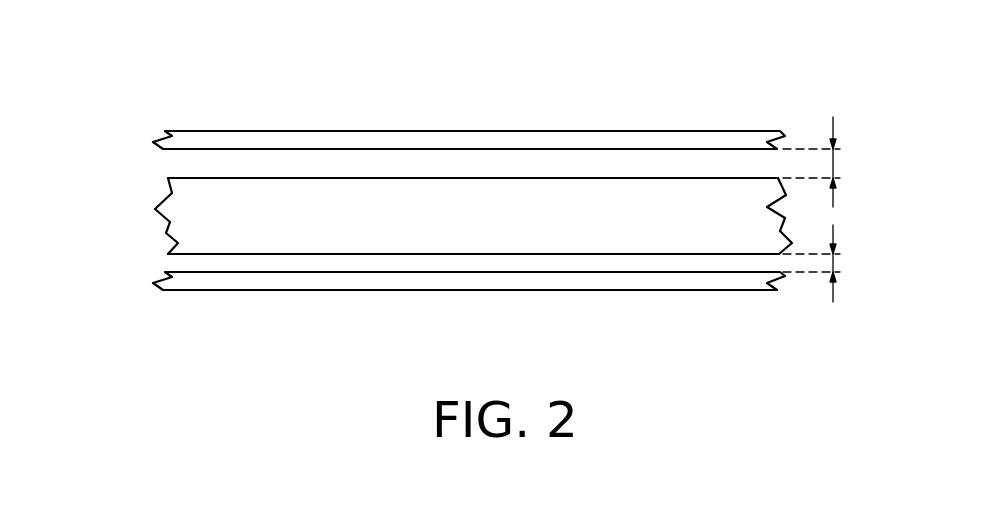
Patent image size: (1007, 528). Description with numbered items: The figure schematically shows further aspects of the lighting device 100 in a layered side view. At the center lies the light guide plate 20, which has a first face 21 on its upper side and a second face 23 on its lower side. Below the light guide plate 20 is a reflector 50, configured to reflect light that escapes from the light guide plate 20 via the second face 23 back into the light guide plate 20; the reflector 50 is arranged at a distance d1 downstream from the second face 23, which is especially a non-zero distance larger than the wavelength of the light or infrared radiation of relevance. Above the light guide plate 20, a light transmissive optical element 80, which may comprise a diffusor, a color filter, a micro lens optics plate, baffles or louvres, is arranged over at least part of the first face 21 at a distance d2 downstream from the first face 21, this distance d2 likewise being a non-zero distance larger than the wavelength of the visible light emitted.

The lighting device 100 is at (202, 95).
The light transmissive optical element 80 is at (323, 137).
The light guide plate 20 is at (590, 190).
The first face 21 is at (667, 177).
The second face 23 is at (673, 255).
The reflector 50 is at (490, 283).
The distance d2 is at (834, 165).
The distance d1 is at (834, 262).